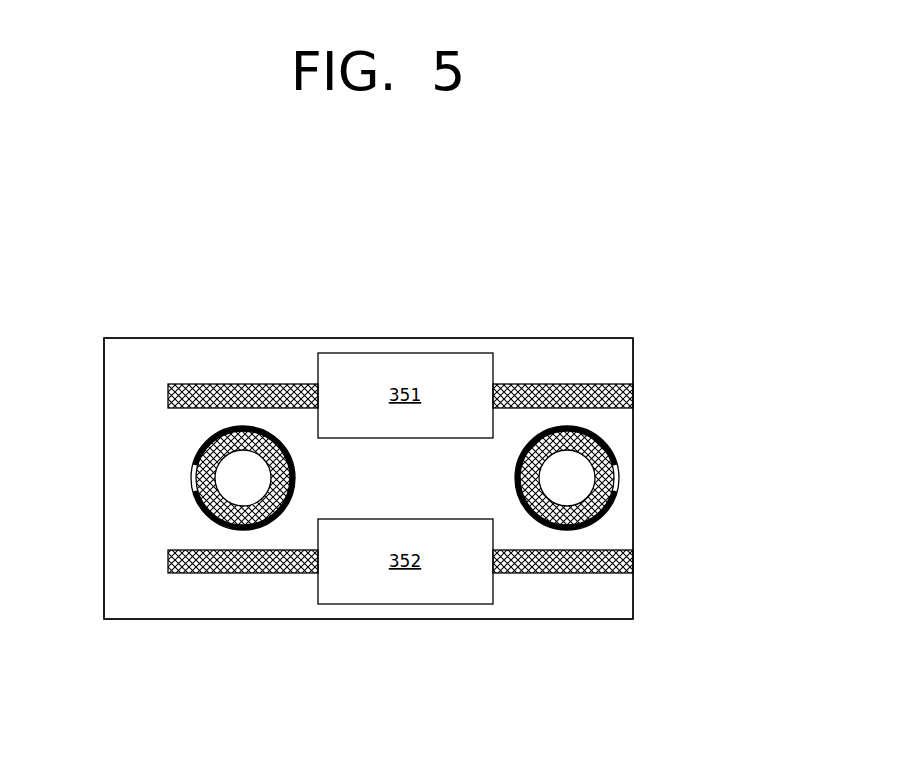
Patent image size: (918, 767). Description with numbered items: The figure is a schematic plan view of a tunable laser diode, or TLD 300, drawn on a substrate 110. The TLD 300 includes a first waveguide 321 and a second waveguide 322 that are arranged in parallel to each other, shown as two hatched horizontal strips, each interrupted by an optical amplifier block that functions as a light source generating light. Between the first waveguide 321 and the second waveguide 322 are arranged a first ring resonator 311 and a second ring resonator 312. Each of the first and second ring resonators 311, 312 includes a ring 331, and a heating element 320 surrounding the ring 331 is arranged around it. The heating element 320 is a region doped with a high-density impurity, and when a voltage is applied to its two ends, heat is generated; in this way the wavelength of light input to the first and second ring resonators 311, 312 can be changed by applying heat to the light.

The tunable laser diode 300 is at (631, 318).
The substrate 110 is at (622, 420).
The first waveguide 321 is at (199, 390).
The second waveguide 322 is at (197, 573).
The heating element 320 is at (193, 462).
The ring 331 is at (192, 455).
The first ring resonator 311 is at (176, 505).
The second ring resonator 312 is at (626, 514).